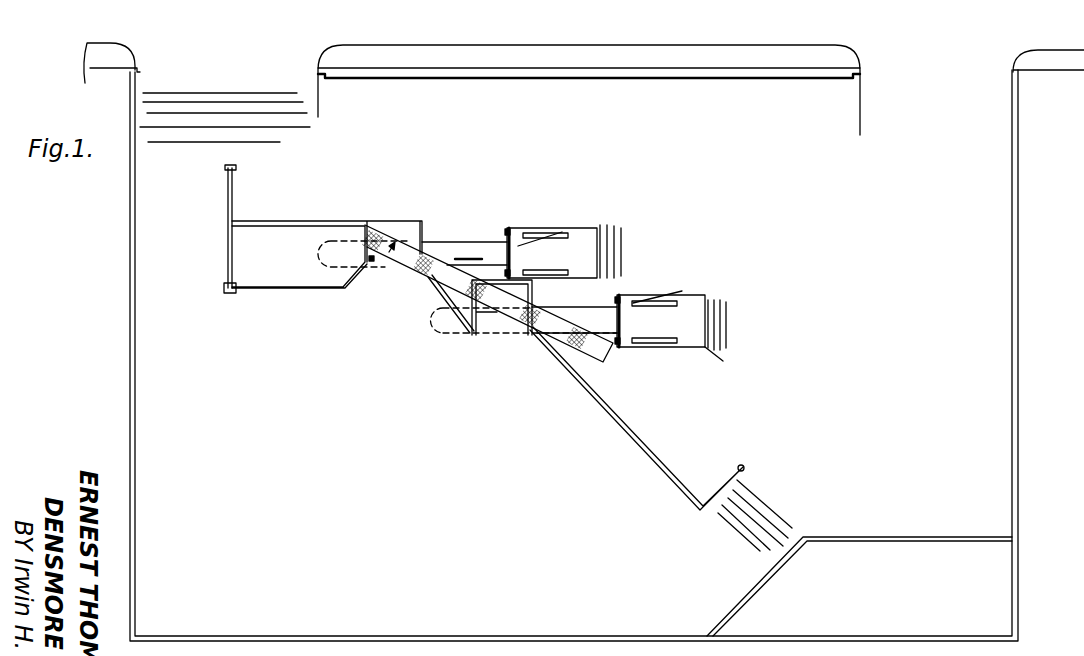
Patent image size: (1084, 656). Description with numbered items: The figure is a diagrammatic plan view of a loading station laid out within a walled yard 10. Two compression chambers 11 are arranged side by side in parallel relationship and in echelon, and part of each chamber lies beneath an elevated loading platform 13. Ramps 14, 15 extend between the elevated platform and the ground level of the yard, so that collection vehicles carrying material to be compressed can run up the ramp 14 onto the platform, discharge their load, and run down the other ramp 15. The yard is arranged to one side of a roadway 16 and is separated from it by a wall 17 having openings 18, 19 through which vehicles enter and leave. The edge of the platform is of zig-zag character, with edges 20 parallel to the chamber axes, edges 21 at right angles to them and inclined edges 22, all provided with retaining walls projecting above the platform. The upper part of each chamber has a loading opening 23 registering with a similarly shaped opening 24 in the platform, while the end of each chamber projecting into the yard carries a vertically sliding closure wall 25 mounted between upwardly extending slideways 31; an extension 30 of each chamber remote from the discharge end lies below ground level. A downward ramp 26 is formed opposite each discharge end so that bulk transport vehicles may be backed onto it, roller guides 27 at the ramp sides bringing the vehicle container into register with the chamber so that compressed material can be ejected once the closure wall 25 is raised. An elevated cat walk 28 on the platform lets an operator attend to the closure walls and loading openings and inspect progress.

The walled yard 10 is at (998, 268).
The compression chamber 11 is at (471, 240).
The elevated loading platform 13 is at (588, 461).
The ramp 14 is at (208, 200).
The ramp 15 is at (755, 508).
The roadway 16 is at (417, 47).
The wall 17 is at (512, 79).
The opening 18 is at (225, 113).
The opening 19 is at (940, 107).
The edge 20 is at (397, 222).
The edge 21 is at (598, 230).
The inclined edge 22 is at (440, 290).
The loading opening 23 is at (507, 327).
The opening 24 is at (377, 262).
The vertically sliding closure wall 25 is at (513, 248).
The downward ramp 26 is at (612, 250).
The roller guide 27 is at (705, 296).
The elevated cat walk 28 is at (583, 343).
The extension 30 is at (343, 250).
The slideway 31 is at (512, 226).